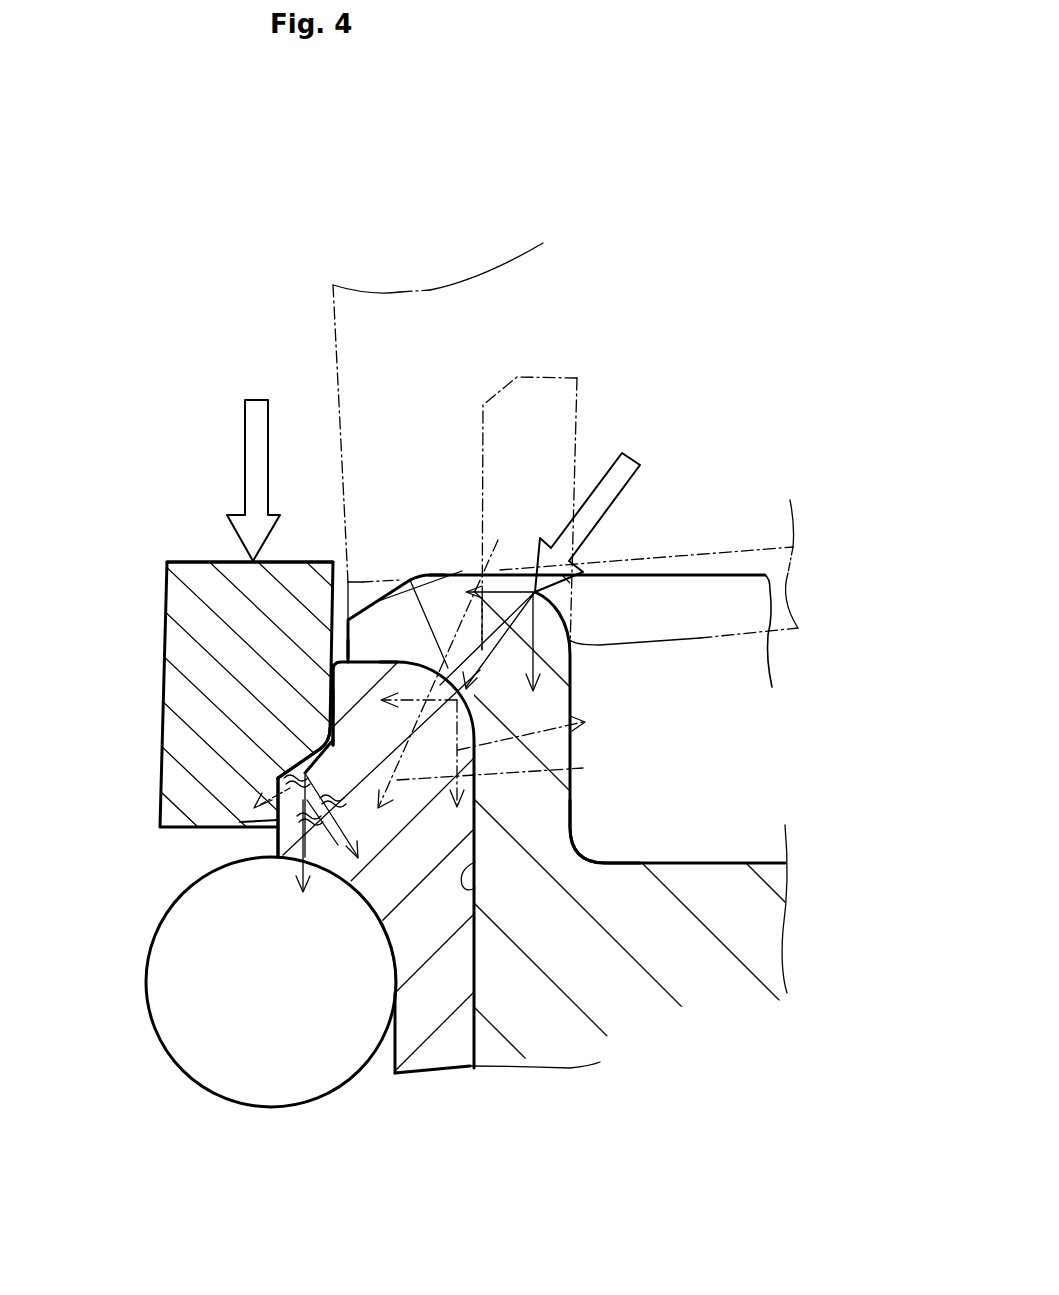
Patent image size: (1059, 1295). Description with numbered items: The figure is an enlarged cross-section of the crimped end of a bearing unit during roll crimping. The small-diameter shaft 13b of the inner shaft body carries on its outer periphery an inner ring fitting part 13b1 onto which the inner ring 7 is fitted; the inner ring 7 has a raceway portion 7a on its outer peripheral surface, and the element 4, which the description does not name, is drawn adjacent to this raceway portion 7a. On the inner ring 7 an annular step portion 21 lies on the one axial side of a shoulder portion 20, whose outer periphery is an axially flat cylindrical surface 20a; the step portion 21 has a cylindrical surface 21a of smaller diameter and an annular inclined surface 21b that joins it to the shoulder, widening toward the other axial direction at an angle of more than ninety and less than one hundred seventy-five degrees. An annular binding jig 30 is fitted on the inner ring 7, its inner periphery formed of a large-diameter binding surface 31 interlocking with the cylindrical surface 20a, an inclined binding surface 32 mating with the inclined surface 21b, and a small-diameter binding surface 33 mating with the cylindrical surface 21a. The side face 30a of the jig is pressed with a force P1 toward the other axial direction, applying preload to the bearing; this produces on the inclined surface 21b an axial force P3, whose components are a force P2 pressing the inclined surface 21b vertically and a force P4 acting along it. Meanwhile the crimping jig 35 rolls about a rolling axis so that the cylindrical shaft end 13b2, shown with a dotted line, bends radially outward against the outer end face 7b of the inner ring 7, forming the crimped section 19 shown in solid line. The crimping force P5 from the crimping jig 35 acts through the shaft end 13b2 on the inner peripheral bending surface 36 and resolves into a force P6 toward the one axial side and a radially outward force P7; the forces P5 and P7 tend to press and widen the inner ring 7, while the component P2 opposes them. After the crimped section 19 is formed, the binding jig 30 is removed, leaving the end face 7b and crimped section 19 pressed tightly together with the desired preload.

The roller 4 is at (178, 995).
The inner ring 7 is at (411, 1076).
The raceway portion 7a is at (388, 950).
The outer end face 7b is at (383, 597).
The small-diameter shaft 13b is at (690, 958).
The inner ring fitting part 13b1 is at (570, 845).
The shaft end 13b2 is at (553, 400).
The crimping part 19 is at (490, 650).
The shoulder portion 20 is at (290, 833).
The cylindrical surface 20a is at (240, 822).
The annular step portion 21 is at (70, 655).
The cylindrical surface 21a is at (330, 707).
The inclined surface 21b is at (330, 752).
The annular binding jig 30 is at (150, 600).
The one axial direction side face 30a is at (193, 562).
The large-diameter binding surface 31 is at (276, 792).
The inclined binding surface 32 is at (378, 658).
The small-diameter binding surface 33 is at (393, 657).
The crimping jig 35 is at (427, 305).
The inner peripheral bending surface 36 is at (443, 655).
The force P1 is at (243, 450).
The force component P2 is at (338, 827).
The force P3 is at (322, 827).
The force component P4 is at (250, 802).
The crimping force P5 is at (632, 478).
The force component P6 is at (536, 598).
The force component P7 is at (505, 565).